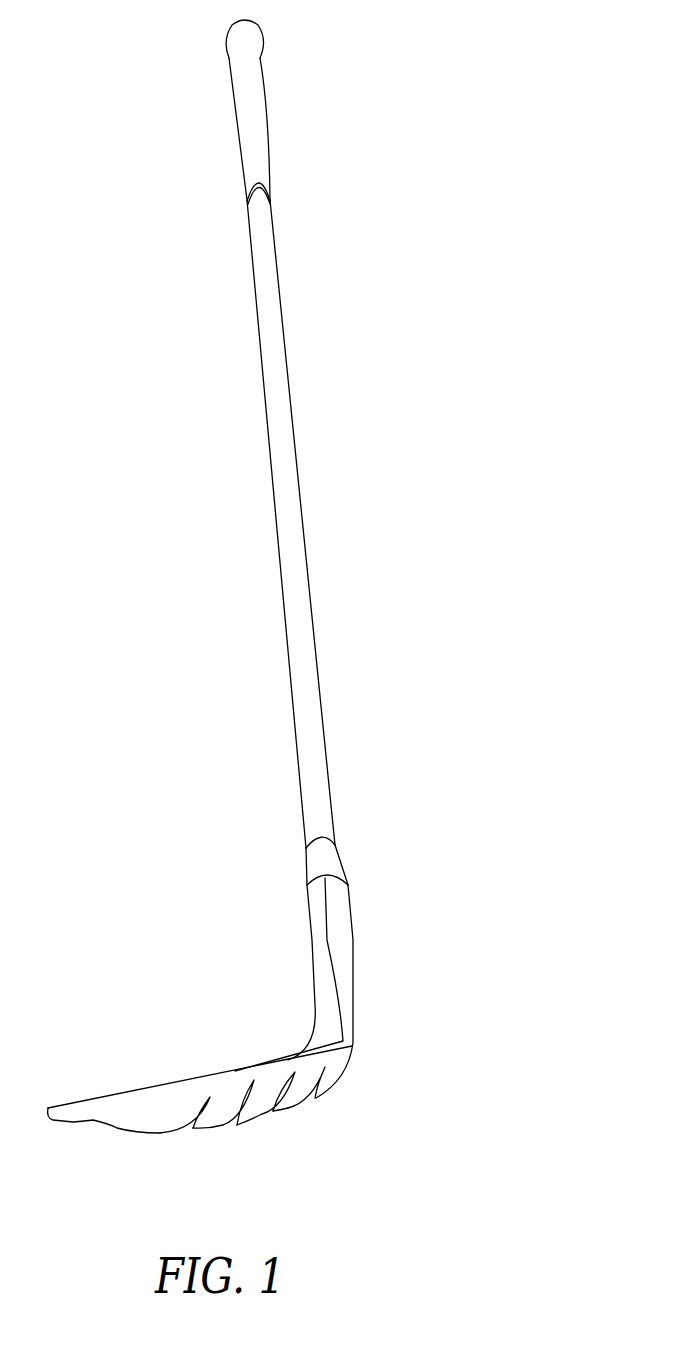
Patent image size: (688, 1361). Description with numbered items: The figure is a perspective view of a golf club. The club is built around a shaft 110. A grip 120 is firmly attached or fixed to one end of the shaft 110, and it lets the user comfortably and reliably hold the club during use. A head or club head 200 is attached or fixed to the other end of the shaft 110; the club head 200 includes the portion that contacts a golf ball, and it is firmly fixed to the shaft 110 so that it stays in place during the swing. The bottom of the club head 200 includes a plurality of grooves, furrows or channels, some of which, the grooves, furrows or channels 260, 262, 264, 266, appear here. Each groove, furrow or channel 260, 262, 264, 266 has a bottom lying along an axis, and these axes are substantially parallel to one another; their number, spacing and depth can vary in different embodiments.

The grip 120 is at (268, 107).
The shaft 110 is at (298, 452).
The club head 200 is at (228, 1021).
The groove, furrow or channel 260 is at (170, 1137).
The groove, furrow or channel 262 is at (233, 1127).
The groove, furrow or channel 264 is at (275, 1112).
The groove, furrow or channel 266 is at (318, 1098).